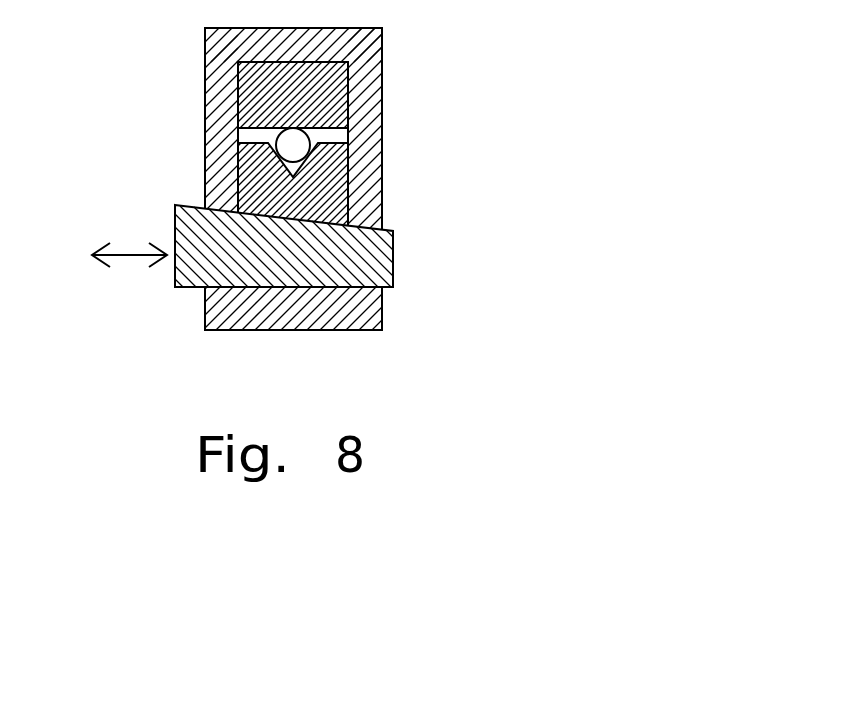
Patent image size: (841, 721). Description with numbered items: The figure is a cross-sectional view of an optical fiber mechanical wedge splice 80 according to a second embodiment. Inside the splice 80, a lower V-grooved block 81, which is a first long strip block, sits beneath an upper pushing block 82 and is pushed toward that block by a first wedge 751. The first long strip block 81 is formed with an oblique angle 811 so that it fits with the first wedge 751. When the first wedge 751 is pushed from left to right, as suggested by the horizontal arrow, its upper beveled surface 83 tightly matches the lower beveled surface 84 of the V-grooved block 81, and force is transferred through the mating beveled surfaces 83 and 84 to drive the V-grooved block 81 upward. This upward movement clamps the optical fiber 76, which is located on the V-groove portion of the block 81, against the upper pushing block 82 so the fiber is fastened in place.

The splice 80 is at (362, 38).
The upper pushing block 82 is at (325, 82).
The lower V-grooved block 81 is at (328, 190).
The optical fiber 76 is at (302, 142).
The first wedge 751 is at (377, 262).
The lower beveled surface 84 is at (279, 213).
The oblique angle 811 is at (242, 199).
The upper beveled surface 83 is at (278, 211).